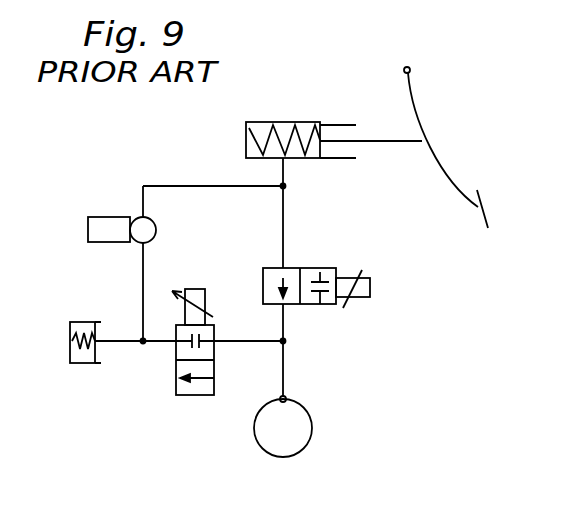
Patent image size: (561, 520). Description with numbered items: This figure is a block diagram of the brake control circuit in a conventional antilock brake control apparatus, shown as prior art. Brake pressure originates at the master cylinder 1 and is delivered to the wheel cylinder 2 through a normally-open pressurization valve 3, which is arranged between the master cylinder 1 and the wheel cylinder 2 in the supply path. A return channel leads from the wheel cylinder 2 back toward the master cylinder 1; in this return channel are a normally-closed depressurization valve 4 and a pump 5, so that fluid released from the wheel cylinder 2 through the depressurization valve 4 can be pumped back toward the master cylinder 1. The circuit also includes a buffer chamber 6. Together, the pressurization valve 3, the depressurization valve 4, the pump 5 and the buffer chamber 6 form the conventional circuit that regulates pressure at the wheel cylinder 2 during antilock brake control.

The master cylinder 1 is at (245, 146).
The wheel cylinder 2 is at (313, 429).
The pressurization valve 3 is at (290, 268).
The depressurization valve 4 is at (175, 368).
The pump 5 is at (134, 217).
The buffer chamber 6 is at (90, 365).